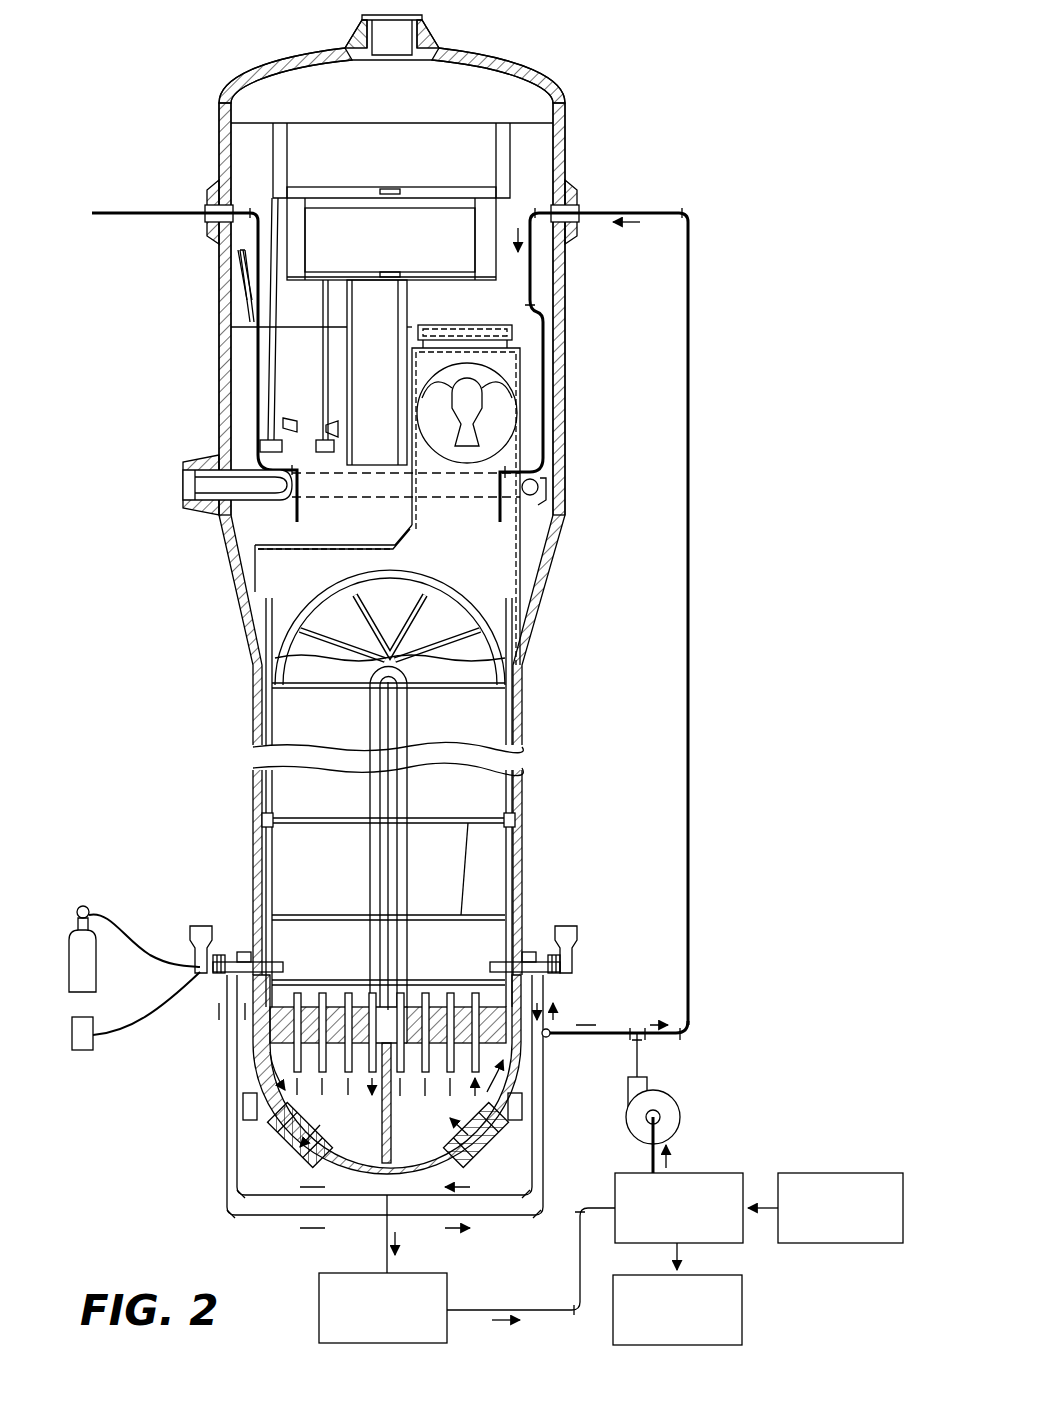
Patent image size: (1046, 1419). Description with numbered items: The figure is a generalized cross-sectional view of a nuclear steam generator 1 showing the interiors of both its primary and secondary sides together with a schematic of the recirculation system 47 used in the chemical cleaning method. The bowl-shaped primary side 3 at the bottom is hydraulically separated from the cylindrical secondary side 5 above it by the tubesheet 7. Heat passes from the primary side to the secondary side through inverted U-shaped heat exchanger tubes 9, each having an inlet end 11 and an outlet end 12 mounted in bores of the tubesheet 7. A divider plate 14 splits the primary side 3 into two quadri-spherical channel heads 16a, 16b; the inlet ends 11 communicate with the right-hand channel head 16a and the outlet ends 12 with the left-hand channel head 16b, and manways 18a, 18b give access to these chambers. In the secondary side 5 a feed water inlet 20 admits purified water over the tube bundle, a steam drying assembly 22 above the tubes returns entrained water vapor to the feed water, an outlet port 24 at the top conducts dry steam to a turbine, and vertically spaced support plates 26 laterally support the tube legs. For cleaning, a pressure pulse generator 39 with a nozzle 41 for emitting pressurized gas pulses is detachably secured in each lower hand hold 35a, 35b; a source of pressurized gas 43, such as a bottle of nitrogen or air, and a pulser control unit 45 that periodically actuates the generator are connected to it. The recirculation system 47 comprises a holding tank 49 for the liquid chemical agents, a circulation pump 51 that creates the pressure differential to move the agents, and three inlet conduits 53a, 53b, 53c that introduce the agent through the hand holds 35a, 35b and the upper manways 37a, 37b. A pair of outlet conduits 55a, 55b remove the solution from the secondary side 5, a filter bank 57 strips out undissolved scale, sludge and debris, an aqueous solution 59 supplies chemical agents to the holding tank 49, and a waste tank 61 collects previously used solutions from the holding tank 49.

The nuclear steam generator 1 is at (205, 125).
The outlet port 24 is at (367, 12).
The upper manway 37b is at (213, 202).
The upper manway 37a is at (566, 205).
The inlet conduit 53c is at (228, 265).
The steam drying assembly 22 is at (522, 380).
The feed water inlet 20 is at (184, 478).
The heat exchanger tubes 9 is at (402, 814).
The secondary side 5 is at (516, 845).
The support plates 26 is at (463, 842).
The divider plate 14 is at (383, 1140).
The outlet end 12 is at (349, 992).
The inlet end 11 is at (425, 992).
The channel head 16b is at (354, 1124).
The channel head 16a is at (437, 1124).
The primary side 3 is at (262, 1075).
The manway 18b is at (272, 1150).
The manway 18a is at (470, 1160).
The outlet conduit 55b is at (228, 1158).
The outlet conduit 55a is at (543, 1130).
The tubesheet 7 is at (245, 1031).
The inlet conduit 53b is at (227, 1086).
The inlet conduit 53a is at (555, 1020).
The nozzle 41 is at (283, 962).
The pressure pulse generator 39 is at (200, 960).
The lower hand hold 35b is at (246, 950).
The lower hand hold 35a is at (536, 952).
The source of pressurized gas 43 is at (97, 975).
The pulser control unit 45 is at (81, 1052).
The filter bank 57 is at (319, 1300).
The holding tank 49 is at (694, 1172).
The circulation pump 51 is at (670, 1102).
The recirculation system 47 is at (712, 1117).
The aqueous solution 59 is at (830, 1173).
The waste tank 61 is at (742, 1313).